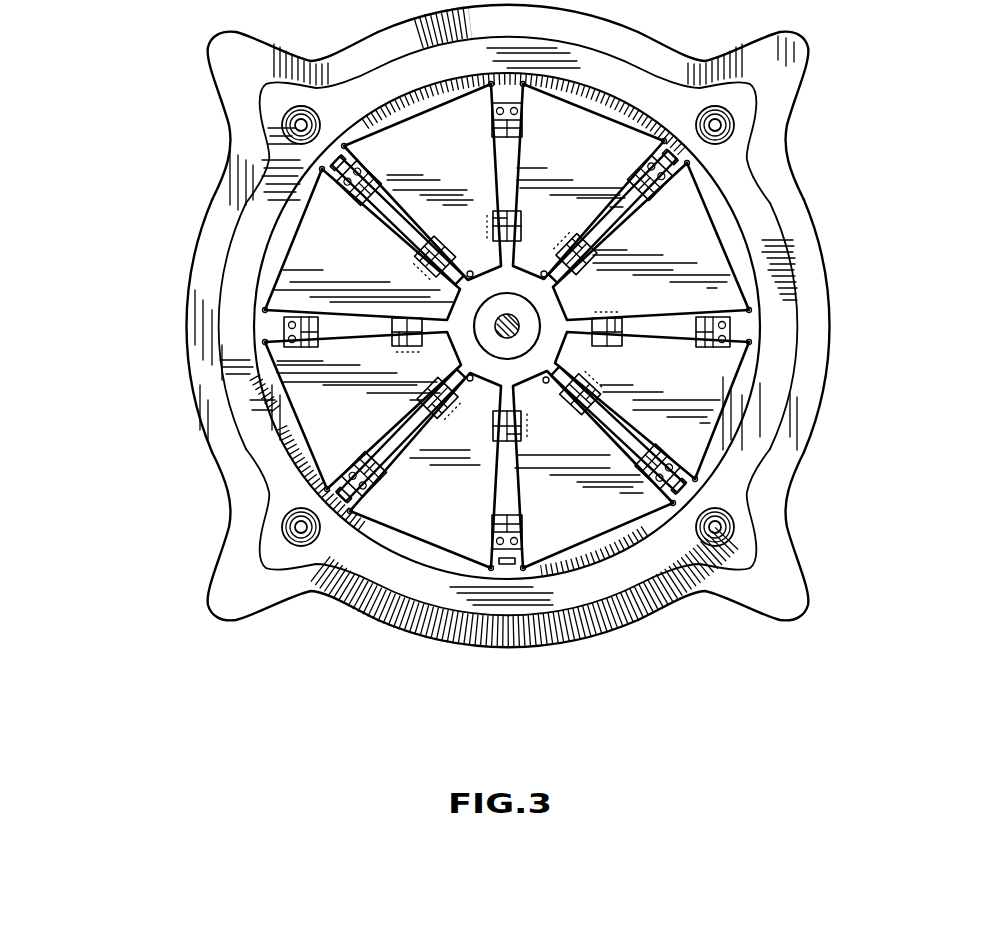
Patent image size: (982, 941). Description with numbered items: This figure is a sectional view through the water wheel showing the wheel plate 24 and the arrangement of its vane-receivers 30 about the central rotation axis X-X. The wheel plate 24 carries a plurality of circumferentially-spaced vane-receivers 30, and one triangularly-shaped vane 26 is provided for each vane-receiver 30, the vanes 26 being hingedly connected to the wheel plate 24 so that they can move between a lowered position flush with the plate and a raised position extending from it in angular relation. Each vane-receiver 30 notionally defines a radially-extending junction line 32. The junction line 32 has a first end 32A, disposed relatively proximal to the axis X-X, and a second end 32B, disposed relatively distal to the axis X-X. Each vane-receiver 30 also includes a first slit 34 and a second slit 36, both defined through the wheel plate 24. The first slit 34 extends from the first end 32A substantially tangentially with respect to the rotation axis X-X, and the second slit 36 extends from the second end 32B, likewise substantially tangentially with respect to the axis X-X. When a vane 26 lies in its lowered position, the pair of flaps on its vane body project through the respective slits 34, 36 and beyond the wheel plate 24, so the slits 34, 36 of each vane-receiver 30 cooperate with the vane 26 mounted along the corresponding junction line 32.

The wheel plate 24 is at (760, 410).
The triangularly-shaped vane 26 is at (265, 292).
The vane-receiver 30 is at (83, 168).
The junction line 32 is at (370, 224).
The first end 32A is at (479, 269).
The second end 32B is at (300, 162).
The first slit 34 is at (440, 298).
The second slit 36 is at (290, 198).
The central rotation axis X is at (535, 325).